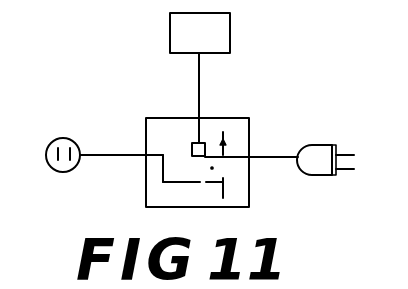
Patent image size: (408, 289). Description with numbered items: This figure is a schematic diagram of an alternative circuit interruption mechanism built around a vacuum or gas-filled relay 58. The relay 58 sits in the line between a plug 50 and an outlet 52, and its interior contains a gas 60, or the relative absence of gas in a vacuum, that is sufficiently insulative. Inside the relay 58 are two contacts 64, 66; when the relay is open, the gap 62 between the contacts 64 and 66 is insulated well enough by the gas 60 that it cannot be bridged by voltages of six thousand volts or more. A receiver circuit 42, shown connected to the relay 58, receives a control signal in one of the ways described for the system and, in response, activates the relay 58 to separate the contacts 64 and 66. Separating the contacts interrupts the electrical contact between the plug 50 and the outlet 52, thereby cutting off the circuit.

The receiver circuit 42 is at (230, 32).
The plug 50 is at (325, 146).
The outlet 52 is at (68, 139).
The relay 58 is at (175, 117).
The gas 60 is at (251, 164).
The gap 62 is at (212, 168).
The contact 64 is at (187, 184).
The contact 66 is at (235, 153).